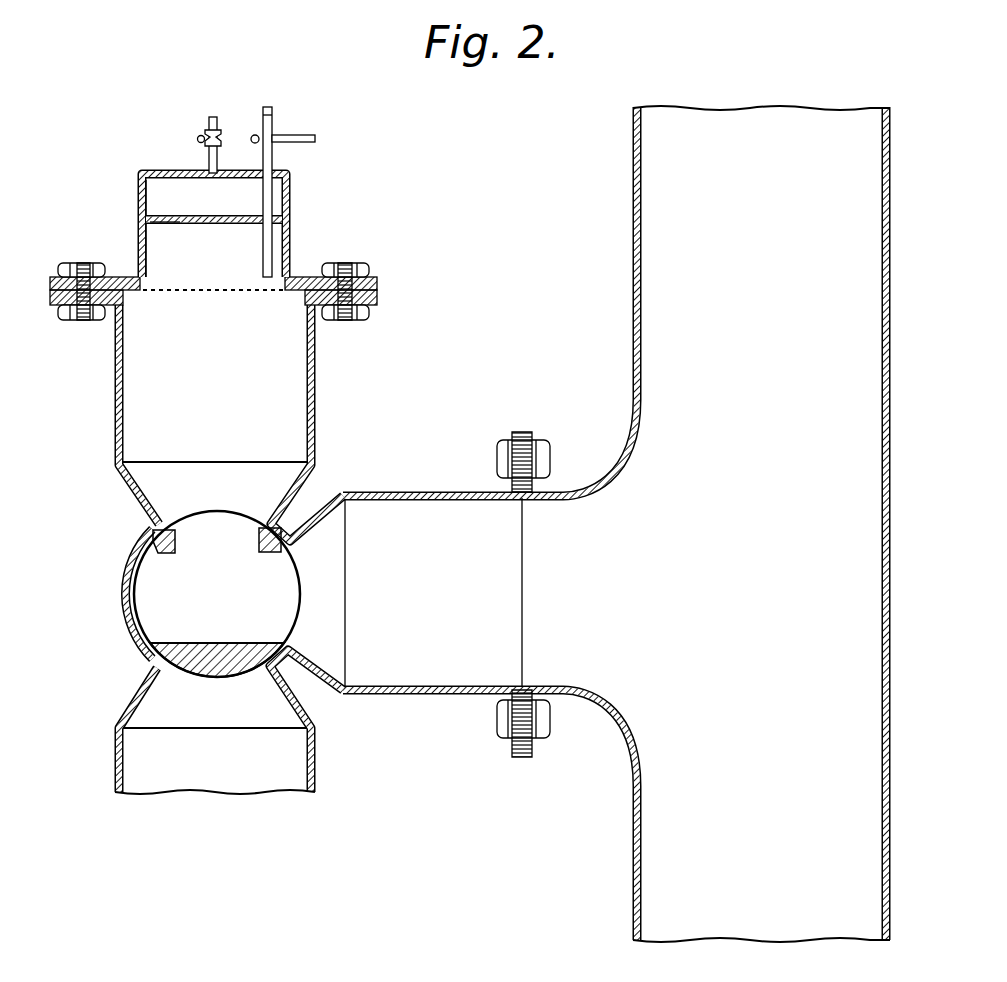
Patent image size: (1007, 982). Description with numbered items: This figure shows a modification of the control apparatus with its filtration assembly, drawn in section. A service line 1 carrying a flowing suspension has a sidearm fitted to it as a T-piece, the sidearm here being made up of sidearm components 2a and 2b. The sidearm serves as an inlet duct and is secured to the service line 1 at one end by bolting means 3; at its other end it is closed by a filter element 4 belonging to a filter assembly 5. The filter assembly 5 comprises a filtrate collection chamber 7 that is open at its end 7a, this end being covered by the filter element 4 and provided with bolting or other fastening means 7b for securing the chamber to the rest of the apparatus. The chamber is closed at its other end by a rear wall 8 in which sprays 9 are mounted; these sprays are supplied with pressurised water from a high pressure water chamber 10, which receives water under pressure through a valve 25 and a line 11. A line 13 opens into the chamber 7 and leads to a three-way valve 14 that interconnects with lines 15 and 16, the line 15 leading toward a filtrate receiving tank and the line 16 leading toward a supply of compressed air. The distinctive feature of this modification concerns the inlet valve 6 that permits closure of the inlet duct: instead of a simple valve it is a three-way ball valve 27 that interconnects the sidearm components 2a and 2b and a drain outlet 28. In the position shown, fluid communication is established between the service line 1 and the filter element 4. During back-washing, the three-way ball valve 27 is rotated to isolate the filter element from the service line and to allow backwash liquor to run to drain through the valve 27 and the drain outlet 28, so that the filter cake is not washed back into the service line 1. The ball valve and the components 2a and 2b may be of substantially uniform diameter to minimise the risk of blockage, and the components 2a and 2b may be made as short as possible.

The service line 1 is at (653, 218).
The sidearm component 2a is at (418, 660).
The sidearm component 2b is at (153, 428).
The bolting means 3 is at (546, 446).
The filter element 4 is at (186, 292).
The filter assembly 5 is at (294, 206).
The inlet valve 6 is at (124, 548).
The filtrate collection chamber 7 is at (178, 248).
The open end of filtrate collection chamber 7a is at (272, 292).
The bolting or fastening means 7b is at (83, 326).
The rear wall 8 is at (193, 217).
The sprays 9 is at (178, 229).
The high pressure water chamber 10 is at (153, 192).
The line 11 is at (211, 157).
The line 13 is at (275, 245).
The 3-way valve 14 is at (253, 136).
The line 15 is at (273, 118).
The line 16 is at (300, 143).
The valve 25 is at (206, 134).
The three-way ball valve 27 is at (176, 653).
The drain outlet 28 is at (146, 767).